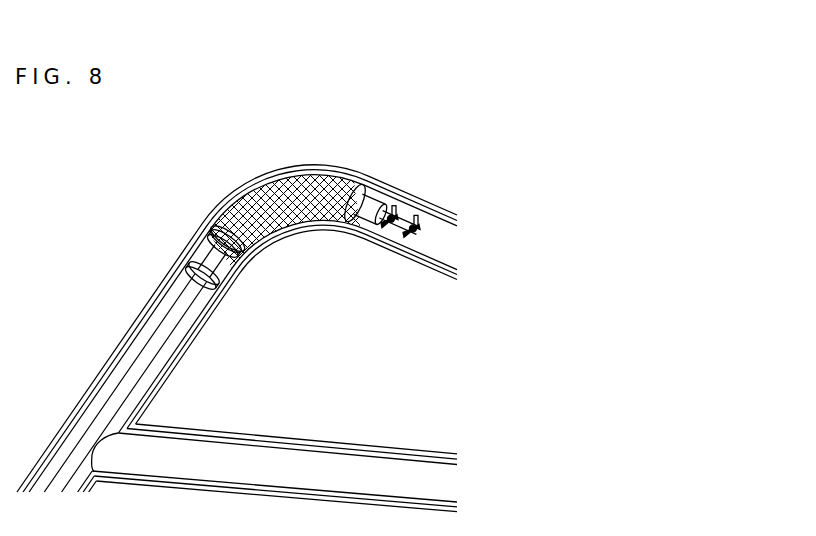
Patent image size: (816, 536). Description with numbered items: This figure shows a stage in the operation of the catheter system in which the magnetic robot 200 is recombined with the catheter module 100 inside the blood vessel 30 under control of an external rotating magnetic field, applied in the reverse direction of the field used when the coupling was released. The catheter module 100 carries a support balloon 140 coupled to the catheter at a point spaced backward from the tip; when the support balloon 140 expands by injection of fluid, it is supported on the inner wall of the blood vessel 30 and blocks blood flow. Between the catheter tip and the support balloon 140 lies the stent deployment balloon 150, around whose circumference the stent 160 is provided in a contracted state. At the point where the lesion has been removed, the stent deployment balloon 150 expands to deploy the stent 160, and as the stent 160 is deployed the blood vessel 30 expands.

The blood vessel 30 is at (413, 198).
The catheter module 100 is at (149, 340).
The support balloon 140 is at (193, 267).
The stent deployment balloon 150 is at (353, 222).
The stent 160 is at (238, 208).
The magnetic robot 200 is at (417, 241).